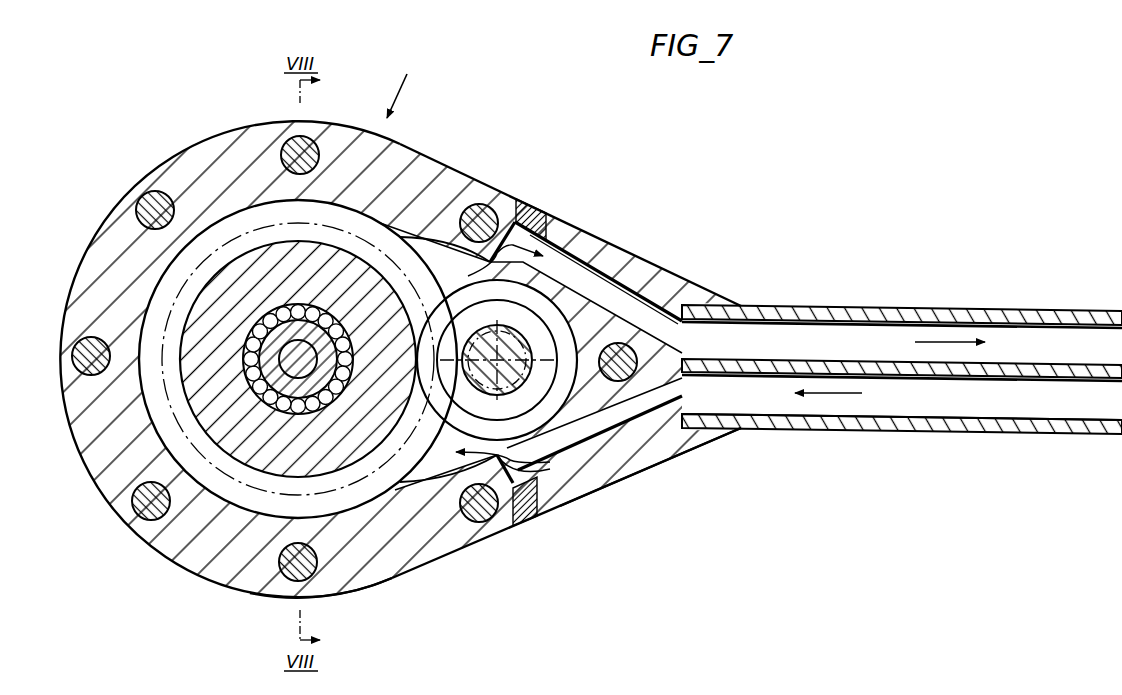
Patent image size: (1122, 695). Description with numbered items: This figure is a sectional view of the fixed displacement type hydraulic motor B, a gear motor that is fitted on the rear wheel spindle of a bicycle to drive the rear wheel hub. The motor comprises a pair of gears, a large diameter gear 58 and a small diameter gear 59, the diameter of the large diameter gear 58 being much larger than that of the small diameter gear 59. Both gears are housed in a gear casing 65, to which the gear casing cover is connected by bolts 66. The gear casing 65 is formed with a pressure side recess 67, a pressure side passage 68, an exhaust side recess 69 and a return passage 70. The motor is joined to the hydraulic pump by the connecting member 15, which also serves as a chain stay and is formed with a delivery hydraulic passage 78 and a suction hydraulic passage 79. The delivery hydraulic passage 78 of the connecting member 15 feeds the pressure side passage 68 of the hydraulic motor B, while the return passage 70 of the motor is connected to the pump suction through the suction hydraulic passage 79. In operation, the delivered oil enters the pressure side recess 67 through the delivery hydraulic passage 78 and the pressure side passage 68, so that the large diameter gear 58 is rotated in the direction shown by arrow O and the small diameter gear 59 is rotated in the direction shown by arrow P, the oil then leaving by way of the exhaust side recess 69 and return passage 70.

The connecting member 15 is at (922, 309).
The large diameter gear 58 is at (270, 462).
The small diameter gear 59 is at (575, 398).
The gear casing 65 is at (370, 556).
The bolts 66 is at (140, 515).
The pressure side recess 67 is at (445, 470).
The pressure side passage 68 is at (655, 425).
The exhaust side recess 69 is at (470, 200).
The return passage 70 is at (568, 262).
The delivery hydraulic passage 78 is at (928, 416).
The suction hydraulic passage 79 is at (822, 335).
The fixed displacement type hydraulic motor B is at (399, 84).
The arrow O is at (320, 447).
The arrow P is at (506, 427).